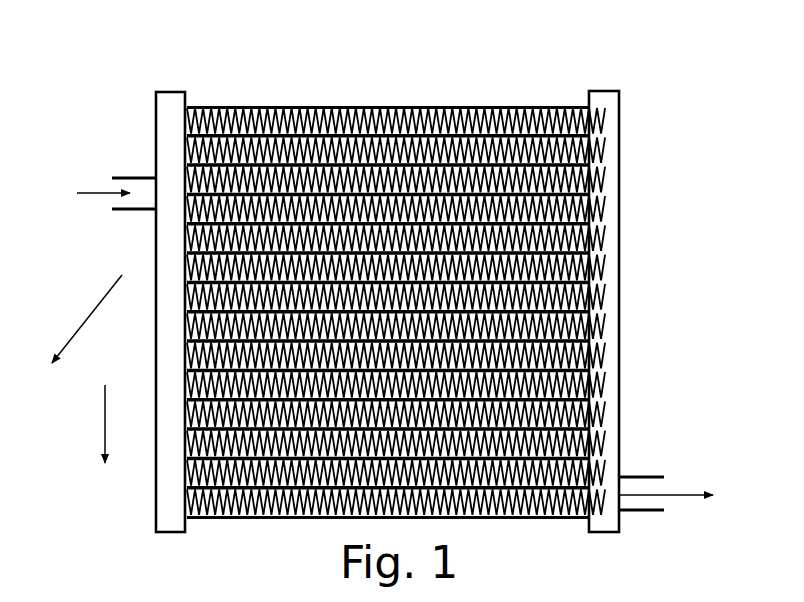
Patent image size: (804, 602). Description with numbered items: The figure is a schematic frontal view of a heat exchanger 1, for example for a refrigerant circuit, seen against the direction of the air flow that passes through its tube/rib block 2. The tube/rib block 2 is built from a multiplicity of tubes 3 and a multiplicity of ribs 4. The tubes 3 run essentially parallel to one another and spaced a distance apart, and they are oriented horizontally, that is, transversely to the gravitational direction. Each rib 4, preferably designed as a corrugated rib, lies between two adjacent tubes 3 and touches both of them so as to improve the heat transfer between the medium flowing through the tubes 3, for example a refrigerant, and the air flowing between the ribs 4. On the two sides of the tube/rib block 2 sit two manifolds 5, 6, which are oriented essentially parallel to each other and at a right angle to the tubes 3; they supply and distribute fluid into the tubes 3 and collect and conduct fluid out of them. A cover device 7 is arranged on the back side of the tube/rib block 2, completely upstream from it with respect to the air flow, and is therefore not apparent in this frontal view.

The heat exchanger 1 is at (636, 156).
The tube/rib block 2 is at (593, 382).
The tube 3 is at (590, 239).
The rib 4 is at (580, 262).
The manifold 5 is at (176, 126).
The manifold 6 is at (605, 412).
The cover device 7 is at (503, 99).